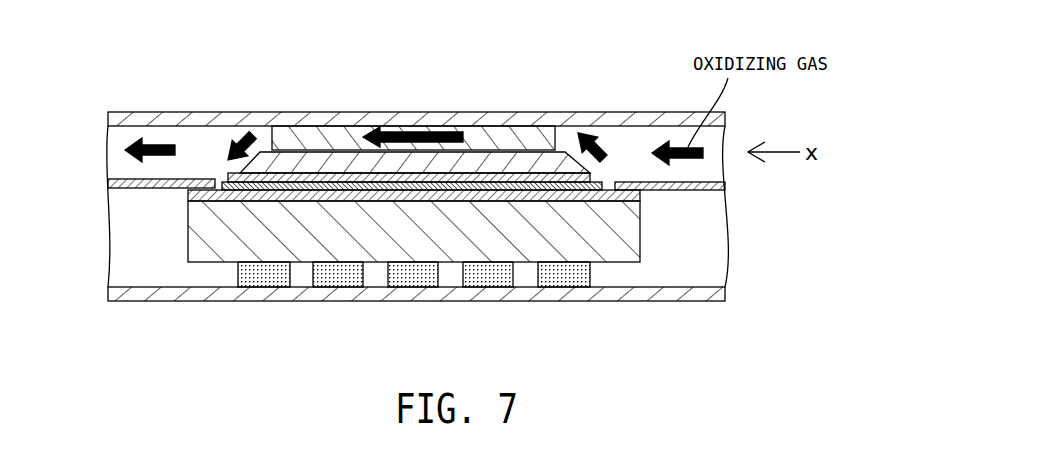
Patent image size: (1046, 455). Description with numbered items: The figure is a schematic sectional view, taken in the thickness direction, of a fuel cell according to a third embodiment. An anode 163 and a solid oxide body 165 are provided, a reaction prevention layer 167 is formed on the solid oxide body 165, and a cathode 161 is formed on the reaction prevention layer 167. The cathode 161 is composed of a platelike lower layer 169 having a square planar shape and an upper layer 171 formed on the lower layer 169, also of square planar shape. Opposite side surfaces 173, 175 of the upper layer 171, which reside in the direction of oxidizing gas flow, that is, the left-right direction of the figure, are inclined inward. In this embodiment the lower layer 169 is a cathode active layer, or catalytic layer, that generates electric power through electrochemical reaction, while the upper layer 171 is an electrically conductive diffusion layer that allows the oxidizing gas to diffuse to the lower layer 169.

The cathode 161 is at (428, 91).
The anode 163 is at (528, 238).
The solid oxide body 165 is at (451, 195).
The reaction prevention layer 167 is at (302, 192).
The lower layer 169 is at (500, 178).
The upper layer 171 is at (483, 152).
The side surface 173 is at (600, 155).
The side surface 175 is at (240, 134).